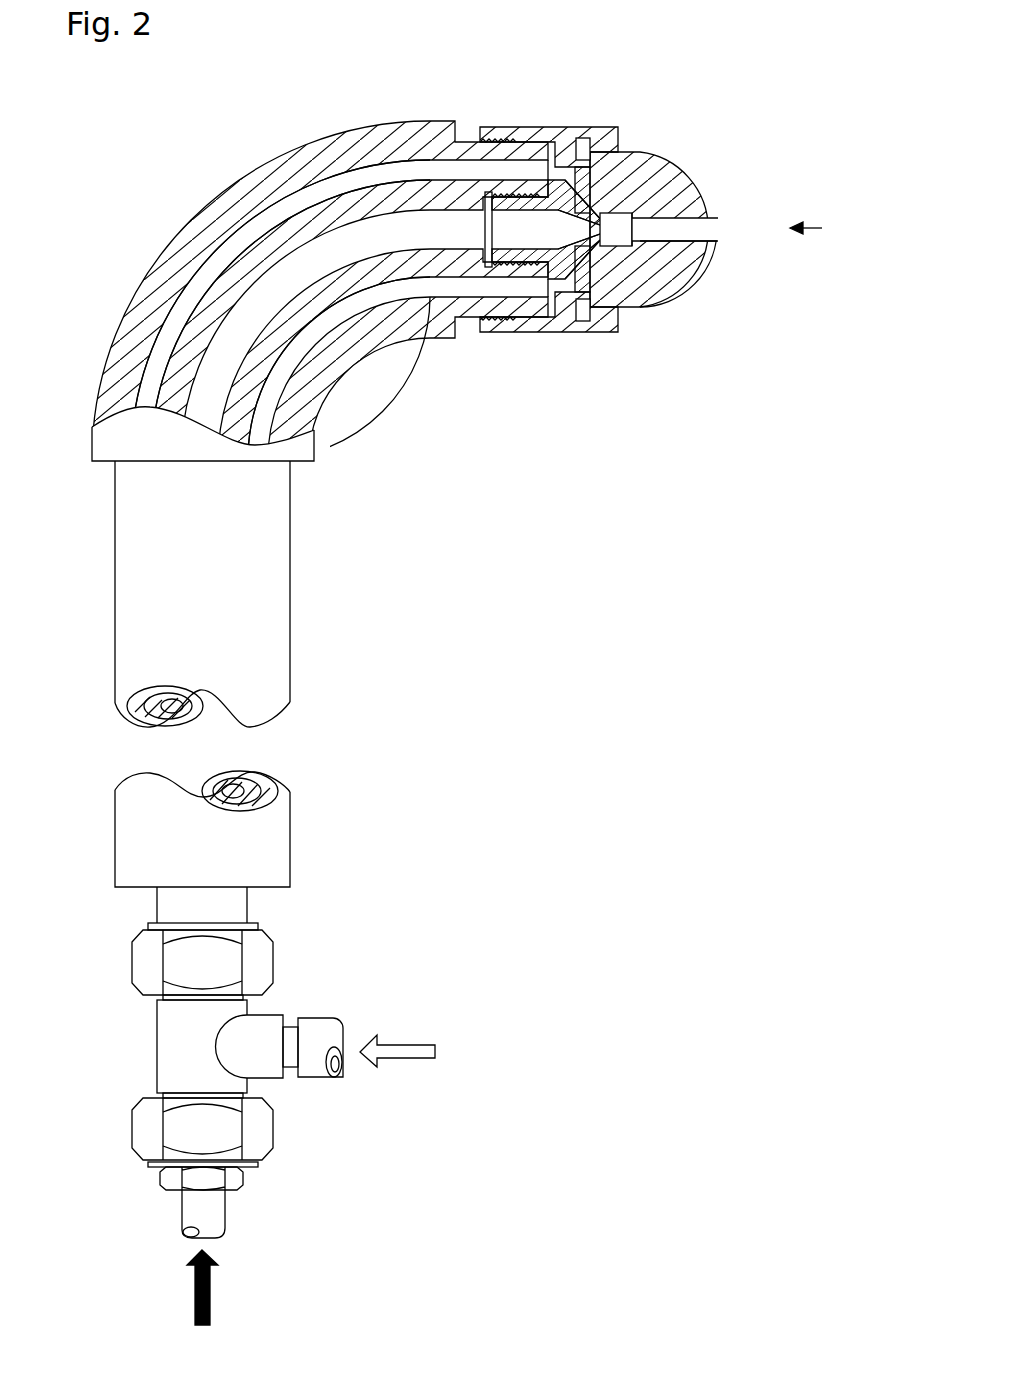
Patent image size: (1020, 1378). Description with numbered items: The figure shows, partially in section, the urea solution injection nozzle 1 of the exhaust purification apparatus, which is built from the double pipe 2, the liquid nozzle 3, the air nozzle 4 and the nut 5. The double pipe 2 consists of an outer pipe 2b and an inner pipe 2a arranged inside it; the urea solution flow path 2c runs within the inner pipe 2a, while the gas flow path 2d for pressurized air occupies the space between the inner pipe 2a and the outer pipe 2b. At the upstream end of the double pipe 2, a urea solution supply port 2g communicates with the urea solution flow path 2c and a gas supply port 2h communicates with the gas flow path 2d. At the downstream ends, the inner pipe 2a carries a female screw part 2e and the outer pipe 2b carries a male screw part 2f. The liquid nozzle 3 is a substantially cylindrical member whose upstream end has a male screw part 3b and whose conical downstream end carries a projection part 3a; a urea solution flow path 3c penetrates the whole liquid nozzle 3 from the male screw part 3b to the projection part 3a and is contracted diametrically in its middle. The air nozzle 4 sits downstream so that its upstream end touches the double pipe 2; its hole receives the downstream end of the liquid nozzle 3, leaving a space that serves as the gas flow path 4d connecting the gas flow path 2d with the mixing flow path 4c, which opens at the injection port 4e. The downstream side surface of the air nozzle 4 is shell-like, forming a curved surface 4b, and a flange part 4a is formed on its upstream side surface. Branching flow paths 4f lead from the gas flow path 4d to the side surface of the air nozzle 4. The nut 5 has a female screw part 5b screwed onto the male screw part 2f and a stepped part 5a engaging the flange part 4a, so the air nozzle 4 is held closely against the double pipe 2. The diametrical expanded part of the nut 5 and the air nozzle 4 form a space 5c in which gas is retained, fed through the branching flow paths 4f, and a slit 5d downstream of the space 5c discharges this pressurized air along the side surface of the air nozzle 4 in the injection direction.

The urea solution injection nozzle 1 is at (443, 699).
The double pipe 2 is at (398, 462).
The inner pipe 2a is at (353, 142).
The outer pipe 2b is at (302, 152).
The urea solution flow path 2c is at (310, 250).
The gas flow path 2d is at (243, 238).
The female screw part 2e is at (530, 193).
The male screw part 2f is at (480, 138).
The urea solution supply port 2g is at (227, 1192).
The gas supply port 2h is at (287, 1016).
The liquid nozzle 3 is at (563, 290).
The projection part 3a is at (592, 243).
The male screw part 3b is at (508, 265).
The urea solution flow path 3c is at (558, 218).
The air nozzle 4 is at (743, 166).
The flange part 4a is at (568, 312).
The curved surface 4b is at (697, 288).
The mixing flow path 4c is at (692, 240).
The gas flow path 4d is at (632, 170).
The injection port 4e is at (720, 226).
The branching flow path 4f is at (583, 138).
The nut 5 is at (639, 332).
The stepped part 5a is at (569, 282).
The female screw part 5b is at (479, 320).
The space 5c is at (588, 318).
The slit 5d is at (612, 150).